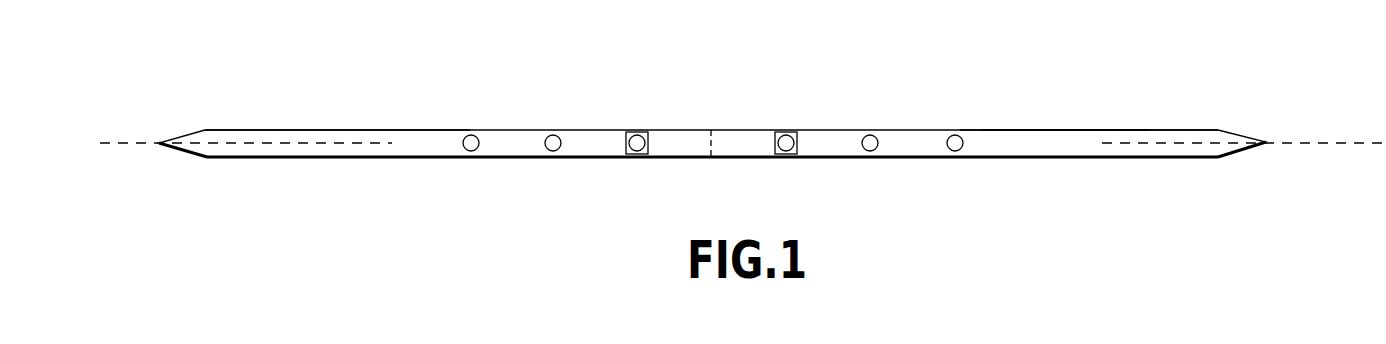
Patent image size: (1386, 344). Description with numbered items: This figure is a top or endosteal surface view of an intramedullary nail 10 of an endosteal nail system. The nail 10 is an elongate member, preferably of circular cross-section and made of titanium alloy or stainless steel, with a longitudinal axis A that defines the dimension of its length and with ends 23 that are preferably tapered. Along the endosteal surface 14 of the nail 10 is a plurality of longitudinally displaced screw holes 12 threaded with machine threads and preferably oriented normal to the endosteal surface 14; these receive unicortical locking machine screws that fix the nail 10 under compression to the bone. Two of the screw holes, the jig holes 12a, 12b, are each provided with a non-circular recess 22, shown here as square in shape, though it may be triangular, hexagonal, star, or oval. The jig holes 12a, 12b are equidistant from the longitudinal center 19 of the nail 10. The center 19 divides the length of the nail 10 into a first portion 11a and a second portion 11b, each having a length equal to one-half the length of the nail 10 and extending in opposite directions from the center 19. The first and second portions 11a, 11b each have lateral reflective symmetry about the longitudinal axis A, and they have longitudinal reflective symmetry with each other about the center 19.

The nail 10 is at (833, 87).
The first portion 11a is at (338, 123).
The second portion 11b is at (1137, 125).
The screw holes 12 is at (468, 135).
The jig hole 12a is at (782, 132).
The jig hole 12b is at (639, 133).
The endosteal surface 14 is at (1062, 137).
The longitudinal center 19 is at (709, 158).
The non-circular recess 22 is at (633, 155).
The ends 23 is at (193, 130).
The longitudinal axis A is at (134, 144).